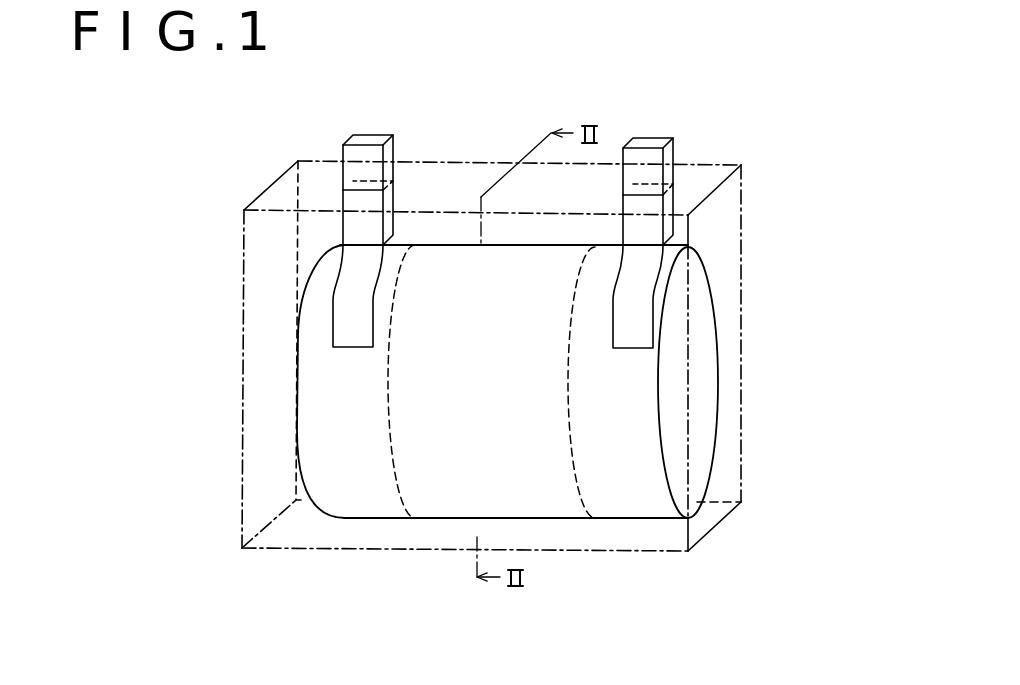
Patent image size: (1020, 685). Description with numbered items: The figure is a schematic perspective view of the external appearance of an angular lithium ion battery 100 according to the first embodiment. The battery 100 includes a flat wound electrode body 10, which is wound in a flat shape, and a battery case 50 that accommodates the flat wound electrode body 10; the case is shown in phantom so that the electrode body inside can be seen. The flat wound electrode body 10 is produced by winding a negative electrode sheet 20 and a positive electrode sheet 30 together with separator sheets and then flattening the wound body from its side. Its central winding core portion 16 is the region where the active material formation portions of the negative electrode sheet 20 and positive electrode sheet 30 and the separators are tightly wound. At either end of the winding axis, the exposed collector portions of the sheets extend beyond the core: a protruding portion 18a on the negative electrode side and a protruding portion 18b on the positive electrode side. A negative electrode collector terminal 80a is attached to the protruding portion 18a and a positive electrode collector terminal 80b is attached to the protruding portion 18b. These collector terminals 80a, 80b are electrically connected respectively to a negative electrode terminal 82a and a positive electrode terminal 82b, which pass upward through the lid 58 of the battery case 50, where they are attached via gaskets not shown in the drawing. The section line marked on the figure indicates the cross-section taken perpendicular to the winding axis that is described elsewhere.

The angular lithium ion battery 100 is at (795, 57).
The flat wound electrode body 10 is at (340, 522).
The winding core portion 16 is at (445, 520).
The protruding portion on the negative electrode side 18a is at (625, 520).
The protruding portion on the positive electrode side 18b is at (392, 522).
The negative electrode sheet 20 is at (660, 392).
The positive electrode sheet 30 is at (297, 387).
The battery case 50 is at (245, 260).
The lid 58 is at (267, 190).
The negative electrode collector terminal 80a is at (642, 312).
The positive electrode collector terminal 80b is at (342, 322).
The negative electrode terminal 82a is at (648, 142).
The positive electrode terminal 82b is at (368, 138).